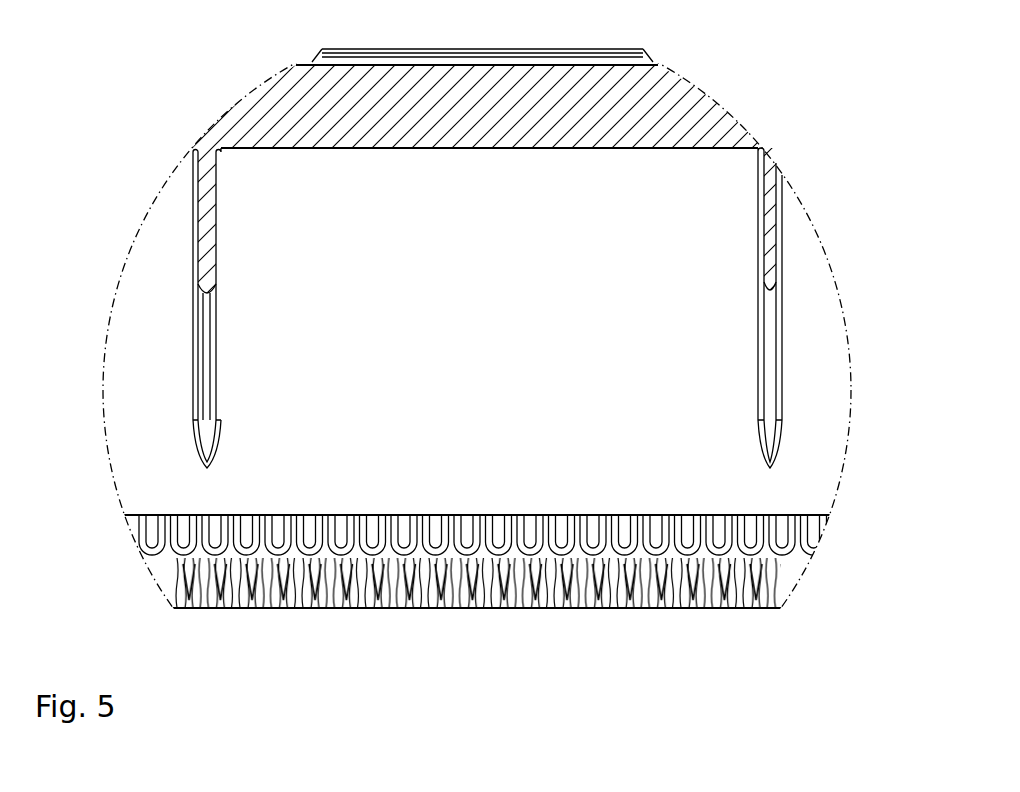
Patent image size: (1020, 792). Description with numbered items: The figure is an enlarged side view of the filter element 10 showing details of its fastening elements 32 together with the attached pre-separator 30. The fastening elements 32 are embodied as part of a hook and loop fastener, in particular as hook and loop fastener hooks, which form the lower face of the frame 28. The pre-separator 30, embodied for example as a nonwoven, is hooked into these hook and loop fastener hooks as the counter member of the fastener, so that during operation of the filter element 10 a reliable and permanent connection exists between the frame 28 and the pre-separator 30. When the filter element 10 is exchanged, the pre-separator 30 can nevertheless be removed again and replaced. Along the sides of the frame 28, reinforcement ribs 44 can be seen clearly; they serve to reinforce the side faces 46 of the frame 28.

The filter element 10 is at (110, 132).
The frame 28 is at (660, 290).
The pre-separator 30 is at (435, 605).
The fastening elements 32 is at (352, 530).
The reinforcement ribs 44 is at (221, 356).
The side faces 46 is at (558, 401).